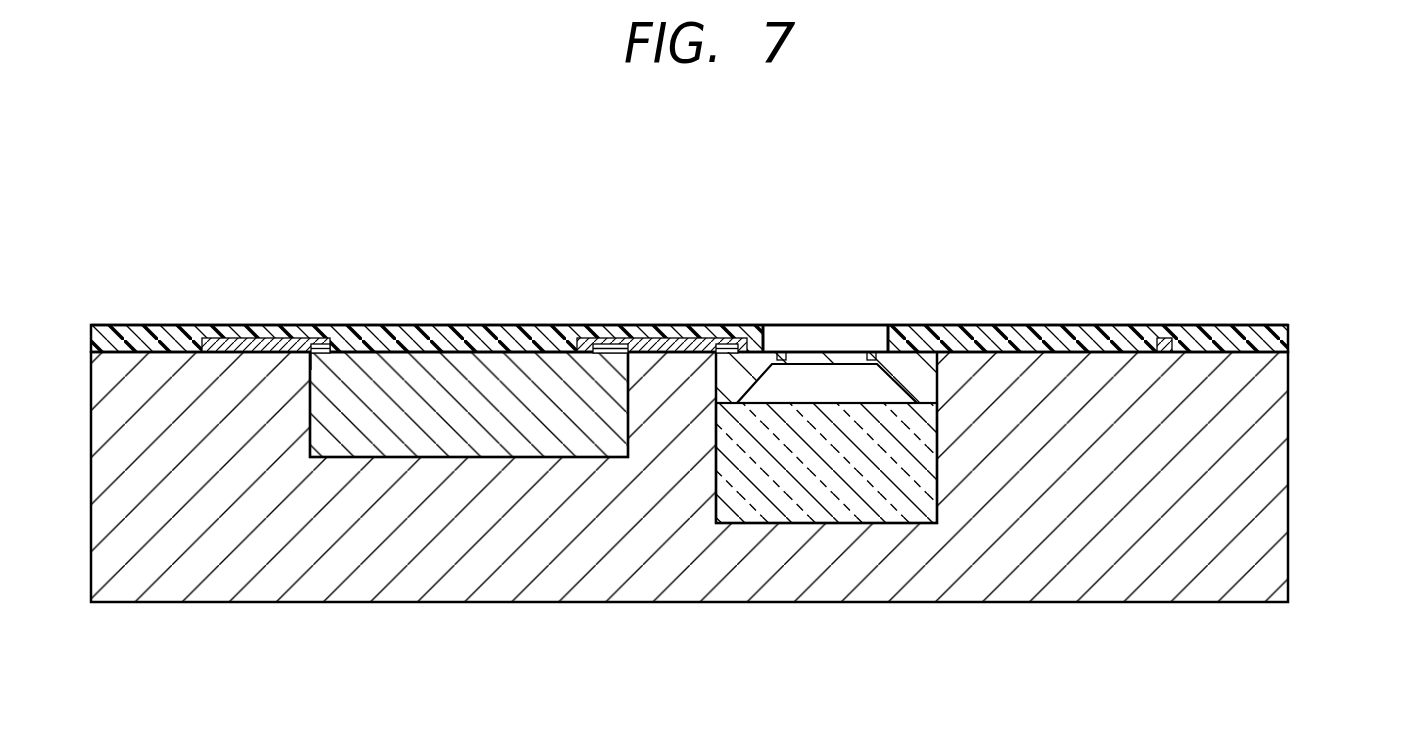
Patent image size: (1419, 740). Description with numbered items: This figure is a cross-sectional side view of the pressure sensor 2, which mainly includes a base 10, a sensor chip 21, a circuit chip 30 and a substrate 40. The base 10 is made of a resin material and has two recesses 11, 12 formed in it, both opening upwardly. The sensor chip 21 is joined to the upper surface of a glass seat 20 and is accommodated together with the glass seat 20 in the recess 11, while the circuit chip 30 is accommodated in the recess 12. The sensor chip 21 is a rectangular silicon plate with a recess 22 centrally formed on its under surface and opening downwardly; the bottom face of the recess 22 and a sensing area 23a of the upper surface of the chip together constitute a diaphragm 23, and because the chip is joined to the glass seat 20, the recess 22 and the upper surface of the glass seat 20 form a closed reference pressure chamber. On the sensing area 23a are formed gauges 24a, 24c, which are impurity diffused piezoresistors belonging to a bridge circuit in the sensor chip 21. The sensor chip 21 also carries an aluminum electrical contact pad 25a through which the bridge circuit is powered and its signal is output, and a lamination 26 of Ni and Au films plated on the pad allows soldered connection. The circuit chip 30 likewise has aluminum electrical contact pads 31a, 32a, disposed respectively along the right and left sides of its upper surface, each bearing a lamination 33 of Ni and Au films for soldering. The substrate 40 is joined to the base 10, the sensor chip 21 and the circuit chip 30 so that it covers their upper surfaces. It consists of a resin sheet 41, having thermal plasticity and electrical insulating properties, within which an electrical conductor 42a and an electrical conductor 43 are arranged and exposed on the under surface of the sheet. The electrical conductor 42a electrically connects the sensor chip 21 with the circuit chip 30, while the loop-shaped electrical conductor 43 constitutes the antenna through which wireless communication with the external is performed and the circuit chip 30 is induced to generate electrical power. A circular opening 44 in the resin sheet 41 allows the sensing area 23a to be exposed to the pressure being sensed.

The pressure sensor 2 is at (514, 238).
The base 10 is at (953, 602).
The recess 11 is at (937, 497).
The recess 12 is at (628, 425).
The glass seat 20 is at (927, 453).
The sensor chip 21 is at (899, 381).
The recess 22 is at (928, 352).
The diaphragm 23 is at (814, 365).
The sensing area 23a is at (818, 352).
The gauge 24a is at (781, 352).
The gauge 24c is at (870, 352).
The electrical contact pad 25a is at (718, 360).
The lamination 26 is at (722, 343).
The circuit chip 30 is at (497, 458).
The electrical contact pad 31a is at (605, 362).
The electrical contact pad 32a is at (318, 360).
The lamination 33 is at (328, 343).
The substrate 40 is at (1290, 333).
The resin sheet 41 is at (1222, 325).
The electrical conductor 42a is at (664, 338).
The electrical conductor 43 is at (252, 337).
The circular opening 44 is at (880, 335).